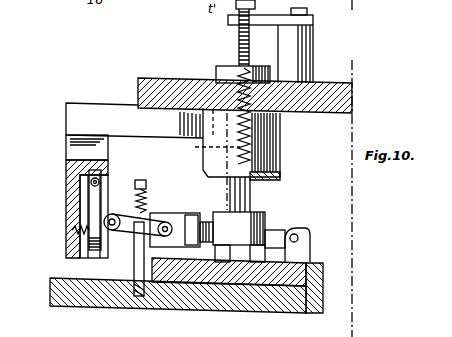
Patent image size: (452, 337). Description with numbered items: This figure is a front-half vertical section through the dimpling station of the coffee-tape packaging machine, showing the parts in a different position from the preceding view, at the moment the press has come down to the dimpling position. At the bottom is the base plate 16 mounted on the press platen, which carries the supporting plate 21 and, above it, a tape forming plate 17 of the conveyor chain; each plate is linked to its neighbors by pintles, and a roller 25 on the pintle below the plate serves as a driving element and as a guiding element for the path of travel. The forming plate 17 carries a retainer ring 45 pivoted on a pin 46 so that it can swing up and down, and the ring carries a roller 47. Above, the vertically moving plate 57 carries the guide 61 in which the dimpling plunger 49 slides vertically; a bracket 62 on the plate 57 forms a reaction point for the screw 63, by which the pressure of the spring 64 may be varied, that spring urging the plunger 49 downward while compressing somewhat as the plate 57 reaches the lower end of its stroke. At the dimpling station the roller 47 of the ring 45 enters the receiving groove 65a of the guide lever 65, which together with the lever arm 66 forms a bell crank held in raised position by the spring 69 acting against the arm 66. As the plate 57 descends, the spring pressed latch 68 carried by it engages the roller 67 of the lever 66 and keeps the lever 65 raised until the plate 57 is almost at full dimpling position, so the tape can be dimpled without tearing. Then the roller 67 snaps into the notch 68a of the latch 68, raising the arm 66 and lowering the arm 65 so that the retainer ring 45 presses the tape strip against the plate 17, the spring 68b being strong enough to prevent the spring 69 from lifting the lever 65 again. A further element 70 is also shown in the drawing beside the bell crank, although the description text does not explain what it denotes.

The base plate 16 is at (50, 290).
The plate 17 is at (182, 0).
The supporting plate 21 is at (151, 0).
The roller 25 is at (205, 334).
The retainer ring 45 is at (278, 232).
The pin 46 is at (298, 238).
The roller 47 is at (209, 222).
The dimpling plunger 49 is at (262, 215).
The plate 57 is at (162, 76).
The guide 61 is at (280, 131).
The bracket 62 is at (308, 19).
The screw 63 is at (238, 33).
The spring 64 is at (205, 147).
The guide lever 65 is at (180, 245).
The receiving groove 65a is at (187, 218).
The lever arm 66 is at (141, 235).
The roller 67 is at (115, 215).
The spring pressed latch 68 is at (88, 205).
The notch 68a is at (104, 222).
The spring 68b is at (66, 240).
The spring 69 is at (151, 206).
The rod 70 is at (134, 268).